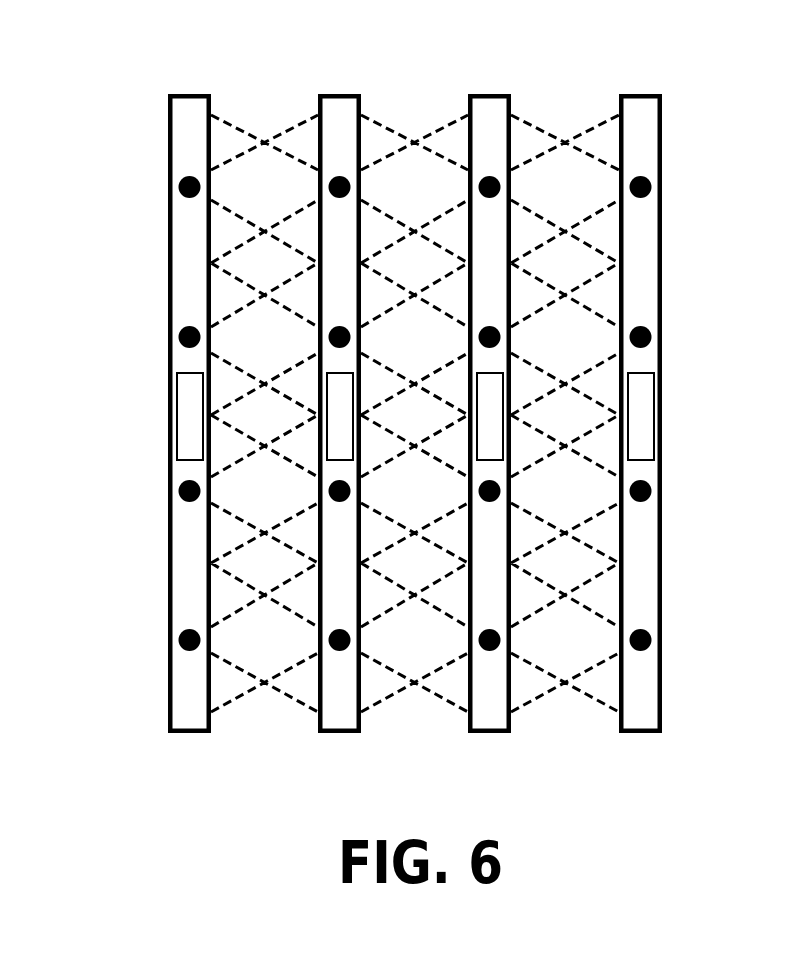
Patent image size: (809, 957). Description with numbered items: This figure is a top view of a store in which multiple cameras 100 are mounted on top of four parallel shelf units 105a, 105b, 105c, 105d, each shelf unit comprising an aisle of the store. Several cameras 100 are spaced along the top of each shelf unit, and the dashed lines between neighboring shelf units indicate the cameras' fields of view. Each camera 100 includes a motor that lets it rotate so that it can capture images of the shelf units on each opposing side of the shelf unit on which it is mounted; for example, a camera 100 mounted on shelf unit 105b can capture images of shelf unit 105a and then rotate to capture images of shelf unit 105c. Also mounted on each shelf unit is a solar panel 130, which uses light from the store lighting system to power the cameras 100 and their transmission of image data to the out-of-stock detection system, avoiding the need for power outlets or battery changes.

The shelf unit 105a is at (167, 90).
The shelf unit 105b is at (317, 90).
The shelf unit 105c is at (467, 90).
The shelf unit 105d is at (618, 90).
The camera 100 is at (179, 189).
The solar panel 130 is at (641, 414).